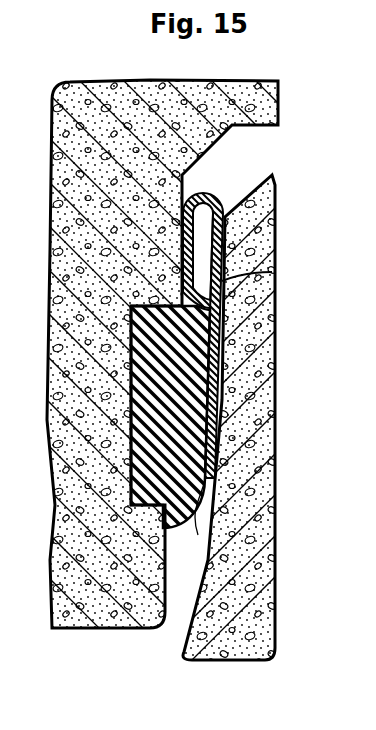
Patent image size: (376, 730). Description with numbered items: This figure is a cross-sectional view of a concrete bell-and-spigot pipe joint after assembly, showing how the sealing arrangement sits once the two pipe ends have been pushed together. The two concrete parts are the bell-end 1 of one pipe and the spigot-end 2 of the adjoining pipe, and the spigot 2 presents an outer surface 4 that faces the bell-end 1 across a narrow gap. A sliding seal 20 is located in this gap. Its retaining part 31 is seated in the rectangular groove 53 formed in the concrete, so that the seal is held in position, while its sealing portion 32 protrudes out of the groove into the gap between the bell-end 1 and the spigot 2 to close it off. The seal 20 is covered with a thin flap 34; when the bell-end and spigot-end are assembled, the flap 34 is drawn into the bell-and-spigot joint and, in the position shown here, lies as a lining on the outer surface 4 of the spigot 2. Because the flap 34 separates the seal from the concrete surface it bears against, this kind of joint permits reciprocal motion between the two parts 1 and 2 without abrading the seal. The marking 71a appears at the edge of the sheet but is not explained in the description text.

The bell-end 1 is at (80, 164).
The spigot-end 2 is at (250, 592).
The outer surface 4 is at (205, 515).
The sliding seal 20 is at (222, 422).
The retaining part 31 is at (160, 369).
The sealing portion 32 is at (200, 387).
The flap 34 is at (264, 281).
The rectangular groove 53 is at (55, 368).
The section line 71a is at (18, 0).